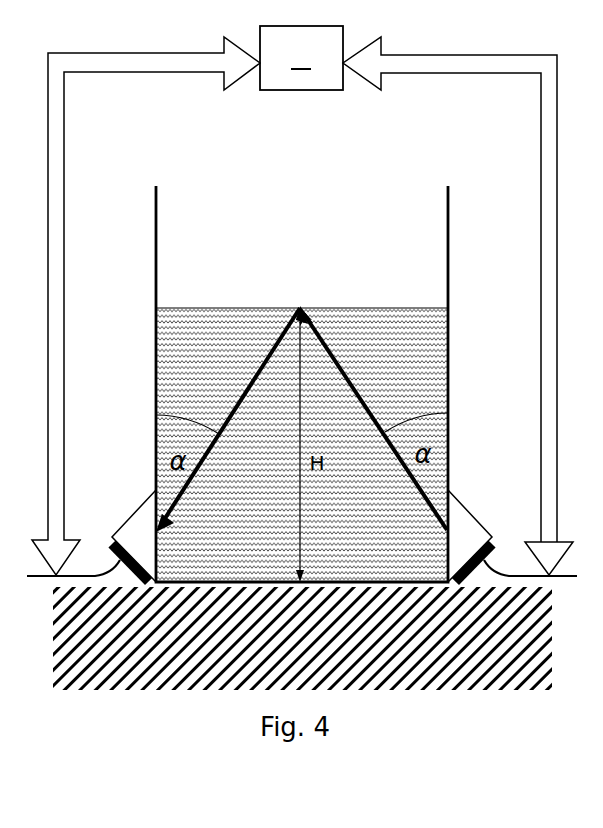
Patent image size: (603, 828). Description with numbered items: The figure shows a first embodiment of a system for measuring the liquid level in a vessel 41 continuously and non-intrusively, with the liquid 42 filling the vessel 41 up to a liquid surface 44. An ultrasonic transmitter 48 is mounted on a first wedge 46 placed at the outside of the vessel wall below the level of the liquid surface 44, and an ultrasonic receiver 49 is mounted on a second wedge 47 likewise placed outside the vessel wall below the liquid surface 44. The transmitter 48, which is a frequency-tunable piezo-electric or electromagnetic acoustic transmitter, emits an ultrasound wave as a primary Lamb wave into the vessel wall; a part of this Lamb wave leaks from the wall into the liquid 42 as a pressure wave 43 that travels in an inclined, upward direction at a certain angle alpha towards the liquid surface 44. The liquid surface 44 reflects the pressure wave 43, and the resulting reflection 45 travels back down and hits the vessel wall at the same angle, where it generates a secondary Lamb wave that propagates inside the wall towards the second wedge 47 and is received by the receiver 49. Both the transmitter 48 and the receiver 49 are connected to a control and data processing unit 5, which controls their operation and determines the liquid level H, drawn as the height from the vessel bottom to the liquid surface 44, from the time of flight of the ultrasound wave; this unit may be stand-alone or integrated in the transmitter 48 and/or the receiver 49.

The control and evaluation unit 5 is at (301, 58).
The vessel 41 is at (448, 267).
The liquid 42 is at (302, 444).
The pressure wave 43 is at (380, 423).
The liquid surface 44 is at (206, 308).
The reflection 45 is at (222, 423).
The first wedge 46 is at (462, 517).
The second wedge 47 is at (135, 530).
The ultrasonic transmitter 48 is at (492, 548).
The ultrasonic receiver 49 is at (117, 547).